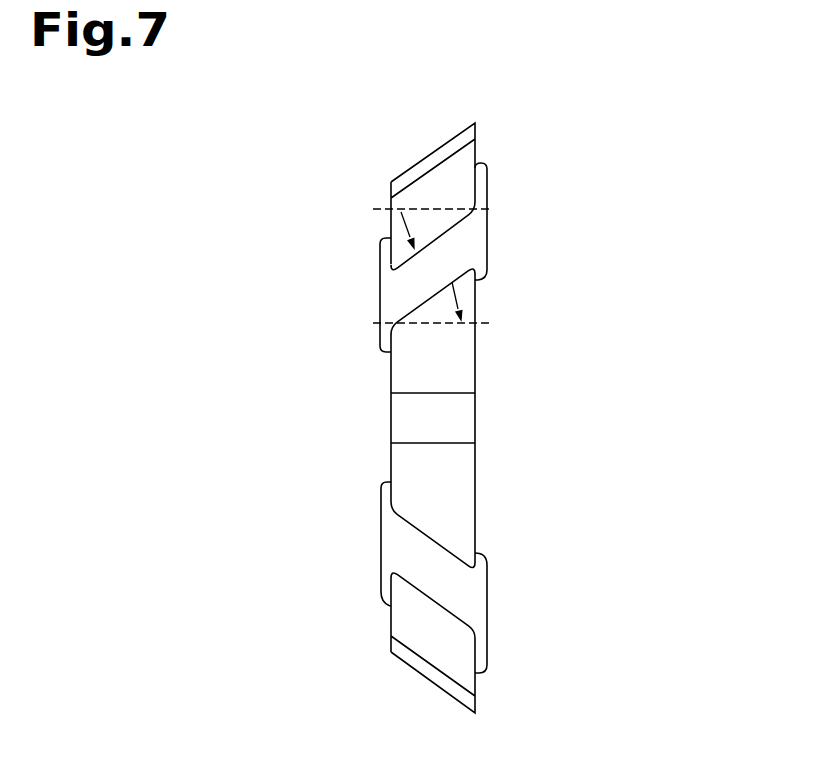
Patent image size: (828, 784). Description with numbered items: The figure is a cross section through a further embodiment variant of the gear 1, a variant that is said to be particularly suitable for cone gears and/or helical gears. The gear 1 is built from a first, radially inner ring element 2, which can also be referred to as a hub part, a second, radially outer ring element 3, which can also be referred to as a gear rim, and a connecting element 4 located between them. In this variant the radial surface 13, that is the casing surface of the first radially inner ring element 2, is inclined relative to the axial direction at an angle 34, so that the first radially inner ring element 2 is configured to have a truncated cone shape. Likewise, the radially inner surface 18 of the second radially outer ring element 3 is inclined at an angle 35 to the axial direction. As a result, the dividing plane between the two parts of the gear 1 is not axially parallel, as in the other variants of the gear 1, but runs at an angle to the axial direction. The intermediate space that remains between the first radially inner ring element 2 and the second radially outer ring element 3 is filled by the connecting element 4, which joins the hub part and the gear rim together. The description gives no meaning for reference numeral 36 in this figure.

The gear 1 is at (627, 147).
The first radially inner ring element 2 is at (453, 488).
The second radially outer ring element 3 is at (408, 191).
The connecting element 4 is at (452, 586).
The radial surface 13 is at (412, 299).
The radially inner surface 18 is at (462, 233).
The angle 34 is at (483, 294).
The angle 35 is at (384, 238).
The lower lateral projections 36 is at (434, 577).